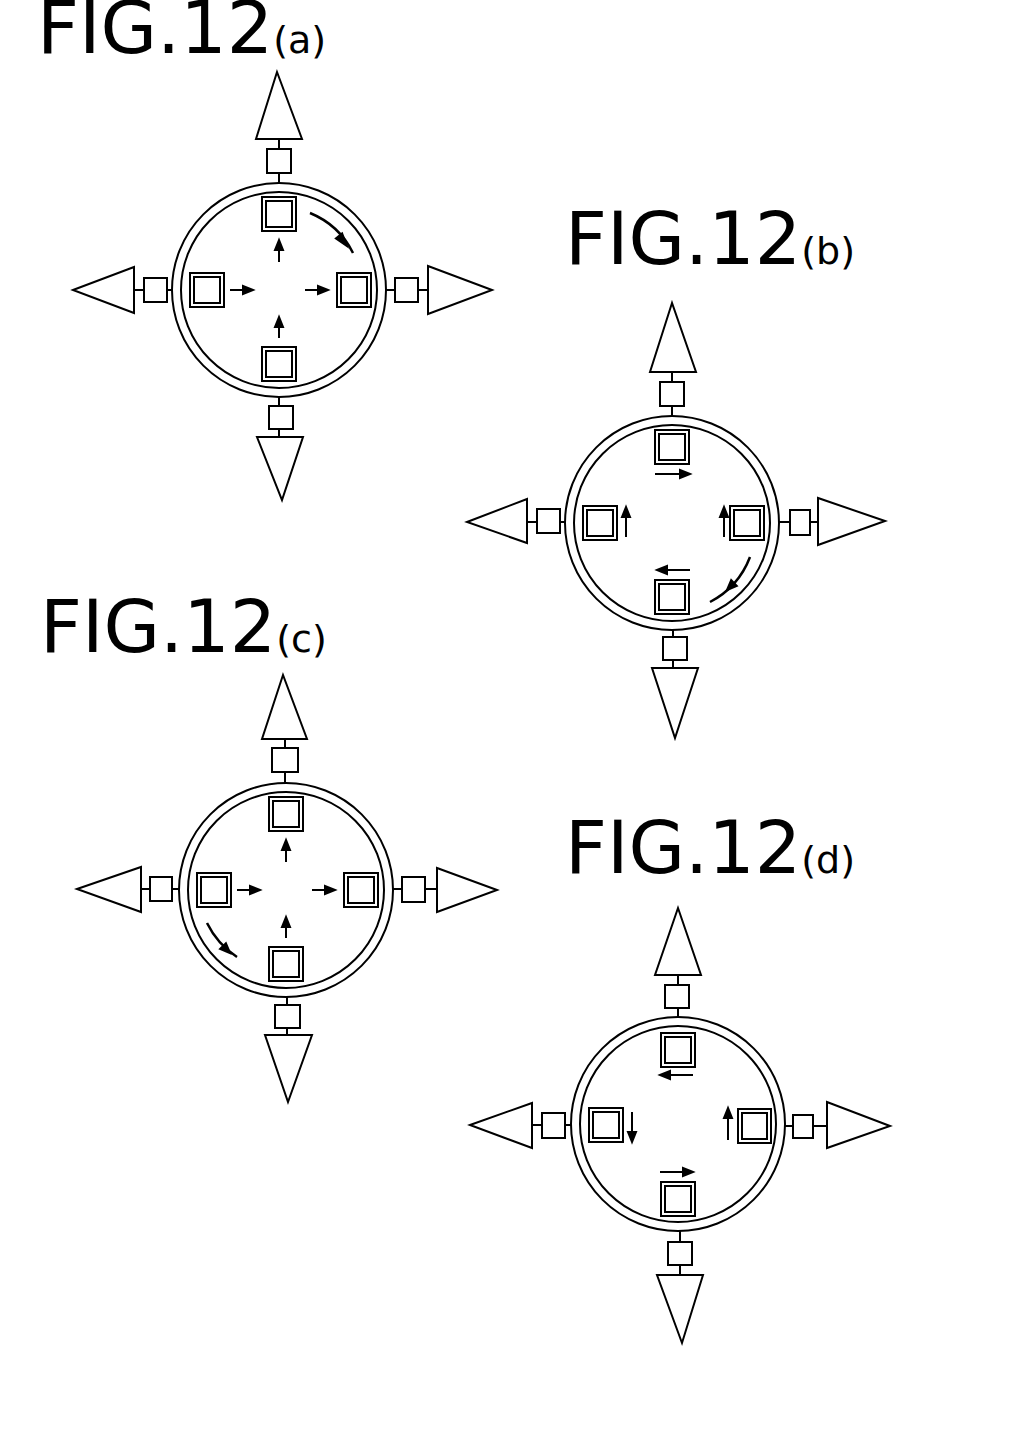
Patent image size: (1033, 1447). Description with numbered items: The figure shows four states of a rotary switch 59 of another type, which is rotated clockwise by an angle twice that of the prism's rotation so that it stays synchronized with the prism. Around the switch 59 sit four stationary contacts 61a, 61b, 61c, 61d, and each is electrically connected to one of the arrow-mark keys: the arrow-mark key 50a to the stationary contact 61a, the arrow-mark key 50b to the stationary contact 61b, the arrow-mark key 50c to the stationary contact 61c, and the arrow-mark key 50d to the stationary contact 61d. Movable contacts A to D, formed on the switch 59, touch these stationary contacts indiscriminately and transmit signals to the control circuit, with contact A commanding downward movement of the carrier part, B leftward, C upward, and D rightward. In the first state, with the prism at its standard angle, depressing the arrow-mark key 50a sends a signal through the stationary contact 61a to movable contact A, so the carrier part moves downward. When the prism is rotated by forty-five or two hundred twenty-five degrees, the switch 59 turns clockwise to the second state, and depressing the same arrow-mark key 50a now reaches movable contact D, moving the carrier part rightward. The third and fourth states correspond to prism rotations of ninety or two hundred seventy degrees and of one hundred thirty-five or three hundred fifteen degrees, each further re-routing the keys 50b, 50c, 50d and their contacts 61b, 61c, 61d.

In FIG. 12A, the arrow-mark key 50a is at (318, 110).
In FIG. 12B, the arrow-mark key 50a is at (714, 342).
In FIG. 12C, the arrow-mark key 50a is at (328, 712).
In FIG. 12D, the arrow-mark key 50a is at (717, 946).
In FIG. 12A, the arrow-mark key 50b is at (464, 267).
In FIG. 12B, the arrow-mark key 50b is at (856, 500).
In FIG. 12C, the arrow-mark key 50b is at (461, 865).
In FIG. 12D, the arrow-mark key 50b is at (858, 1099).
In FIG. 12A, the arrow-mark key 50c is at (318, 468).
In FIG. 12B, the arrow-mark key 50c is at (716, 703).
In FIG. 12C, the arrow-mark key 50c is at (327, 1068).
In FIG. 12D, the arrow-mark key 50c is at (716, 1309).
In FIG. 12A, the arrow-mark key 50d is at (108, 317).
In FIG. 12B, the arrow-mark key 50d is at (510, 547).
In FIG. 12C, the arrow-mark key 50d is at (113, 916).
In FIG. 12D, the arrow-mark key 50d is at (506, 1148).
In FIG. 12A, the stationary contact 61a is at (324, 162).
In FIG. 12B, the stationary contact 61a is at (719, 394).
In FIG. 12C, the stationary contact 61a is at (333, 760).
In FIG. 12D, the stationary contact 61a is at (722, 997).
In FIG. 12A, the stationary contact 61b is at (415, 321).
In FIG. 12B, the stationary contact 61b is at (811, 550).
In FIG. 12C, the stationary contact 61b is at (422, 923).
In FIG. 12D, the stationary contact 61b is at (816, 1154).
In FIG. 12A, the stationary contact 61c is at (324, 417).
In FIG. 12B, the stationary contact 61c is at (638, 649).
In FIG. 12C, the stationary contact 61c is at (332, 1016).
In FIG. 12D, the stationary contact 61c is at (721, 1253).
In FIG. 12A, the stationary contact 61d is at (143, 258).
In FIG. 12B, the stationary contact 61d is at (534, 489).
In FIG. 12C, the stationary contact 61d is at (151, 858).
In FIG. 12D, the stationary contact 61d is at (544, 1098).
In FIG. 12A, the rotary switch 59 is at (290, 290).
In FIG. 12B, the rotary switch 59 is at (689, 523).
In FIG. 12C, the rotary switch 59 is at (300, 890).
In FIG. 12D, the rotary switch 59 is at (694, 1124).